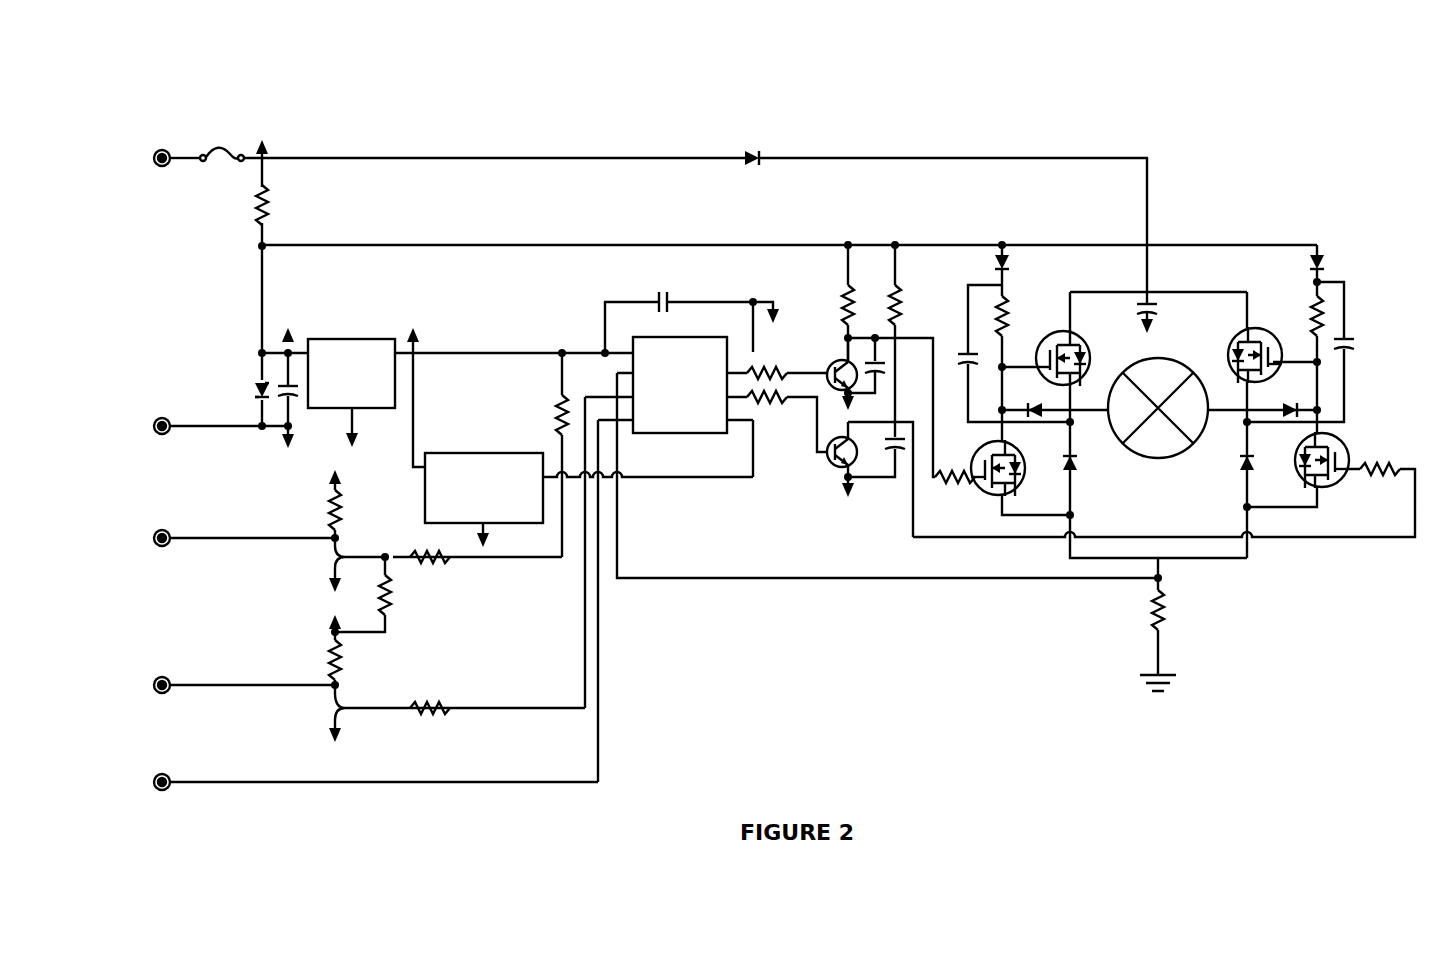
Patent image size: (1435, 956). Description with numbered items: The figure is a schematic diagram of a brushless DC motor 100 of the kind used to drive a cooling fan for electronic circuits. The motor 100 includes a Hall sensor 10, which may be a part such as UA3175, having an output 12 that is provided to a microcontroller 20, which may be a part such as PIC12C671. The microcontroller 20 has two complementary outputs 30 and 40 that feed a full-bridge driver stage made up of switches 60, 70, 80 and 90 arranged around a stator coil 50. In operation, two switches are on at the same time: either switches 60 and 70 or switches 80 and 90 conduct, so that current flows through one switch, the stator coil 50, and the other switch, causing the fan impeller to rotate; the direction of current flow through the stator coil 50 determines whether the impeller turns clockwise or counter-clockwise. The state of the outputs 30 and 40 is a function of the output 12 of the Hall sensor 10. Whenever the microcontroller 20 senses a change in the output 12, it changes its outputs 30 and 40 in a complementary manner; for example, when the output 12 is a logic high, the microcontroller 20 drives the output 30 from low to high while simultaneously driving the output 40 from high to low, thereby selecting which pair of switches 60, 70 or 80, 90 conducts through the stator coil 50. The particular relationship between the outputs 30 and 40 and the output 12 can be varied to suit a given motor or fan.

The motor 100 is at (745, 68).
The Hall sensor 10 is at (470, 453).
The output 12 is at (678, 482).
The microcontroller 20 is at (650, 433).
The output 30 is at (775, 373).
The output 40 is at (760, 400).
The stator coil 50 is at (1158, 458).
The switch 60 is at (984, 500).
The switch 70 is at (1262, 330).
The switch 80 is at (1350, 440).
The switch 90 is at (1040, 330).